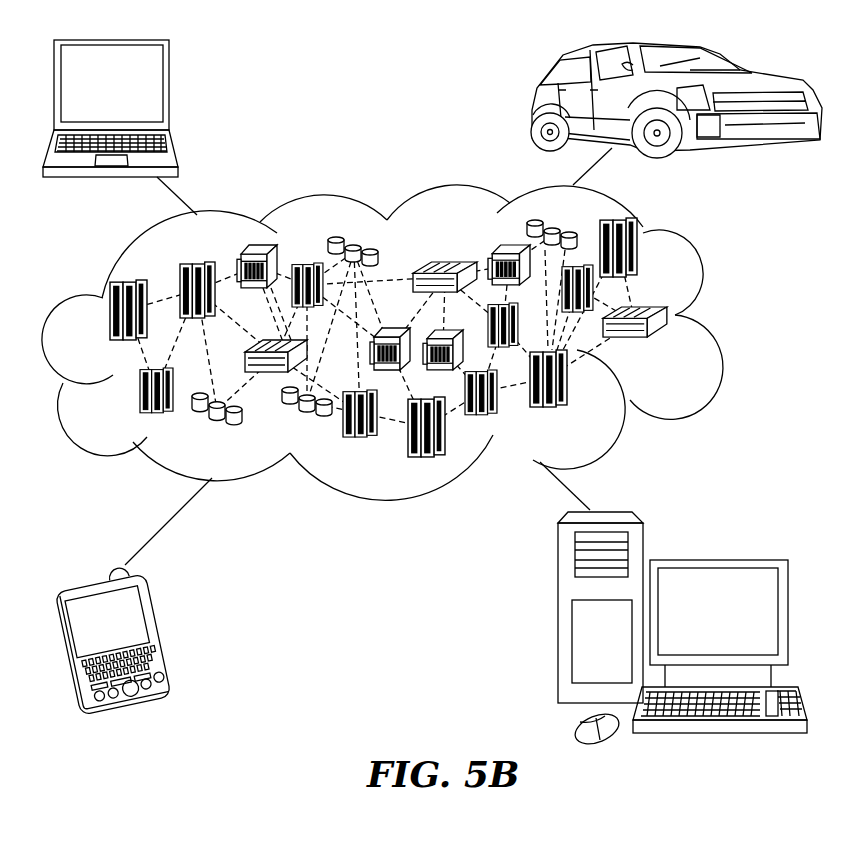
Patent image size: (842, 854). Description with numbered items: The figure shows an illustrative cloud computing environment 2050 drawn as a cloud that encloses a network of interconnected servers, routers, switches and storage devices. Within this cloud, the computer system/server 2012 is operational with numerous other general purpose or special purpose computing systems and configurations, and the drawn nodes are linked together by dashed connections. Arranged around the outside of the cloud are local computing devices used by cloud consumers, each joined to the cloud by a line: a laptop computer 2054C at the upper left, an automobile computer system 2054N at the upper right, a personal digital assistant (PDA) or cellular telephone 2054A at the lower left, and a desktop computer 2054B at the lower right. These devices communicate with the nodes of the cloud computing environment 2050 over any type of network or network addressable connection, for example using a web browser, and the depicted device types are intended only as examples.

The laptop computer 2054C is at (168, 91).
The automobile computer system 2054N is at (533, 104).
The cloud computing environment 2050 is at (717, 318).
The computer system/server 2012 is at (670, 343).
The personal digital assistant (PDA) or cellular telephone 2054A is at (162, 637).
The desktop computer 2054B is at (713, 558).